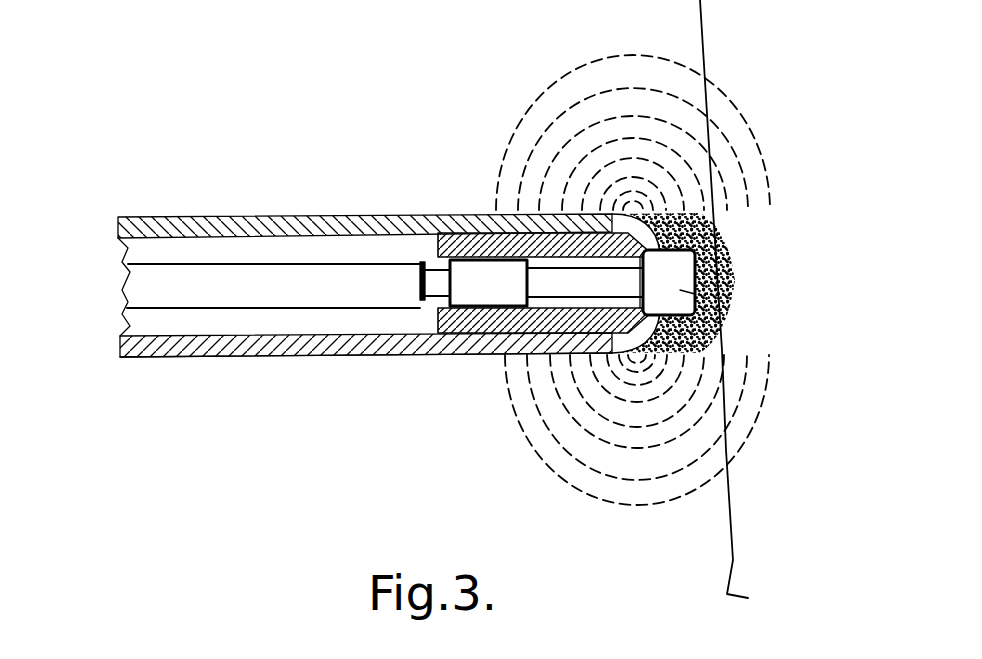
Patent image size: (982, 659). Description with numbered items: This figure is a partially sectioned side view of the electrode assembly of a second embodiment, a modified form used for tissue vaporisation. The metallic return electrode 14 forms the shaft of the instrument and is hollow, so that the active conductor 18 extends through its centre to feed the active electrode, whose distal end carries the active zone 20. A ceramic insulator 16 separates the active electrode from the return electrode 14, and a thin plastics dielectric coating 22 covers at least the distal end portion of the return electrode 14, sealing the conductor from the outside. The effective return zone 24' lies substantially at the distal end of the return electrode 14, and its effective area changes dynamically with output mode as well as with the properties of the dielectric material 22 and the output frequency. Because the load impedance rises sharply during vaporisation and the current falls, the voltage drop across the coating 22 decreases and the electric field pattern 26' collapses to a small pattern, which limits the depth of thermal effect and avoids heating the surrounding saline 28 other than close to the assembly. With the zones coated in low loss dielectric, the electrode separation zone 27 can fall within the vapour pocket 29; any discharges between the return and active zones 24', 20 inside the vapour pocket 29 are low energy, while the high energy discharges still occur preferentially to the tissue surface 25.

The return electrode 14 is at (118, 355).
The ceramic insulator 16 is at (483, 322).
The active conductor 18 is at (145, 278).
The active zone 20 is at (680, 290).
The dielectric coating 22 is at (268, 360).
The return zone 24' is at (544, 331).
The tissue surface 25 is at (700, 50).
The field pattern 26' is at (657, 280).
The electrode separation zone 27 is at (720, 226).
The saline 28 is at (378, 494).
The vapour pocket 29 is at (710, 258).